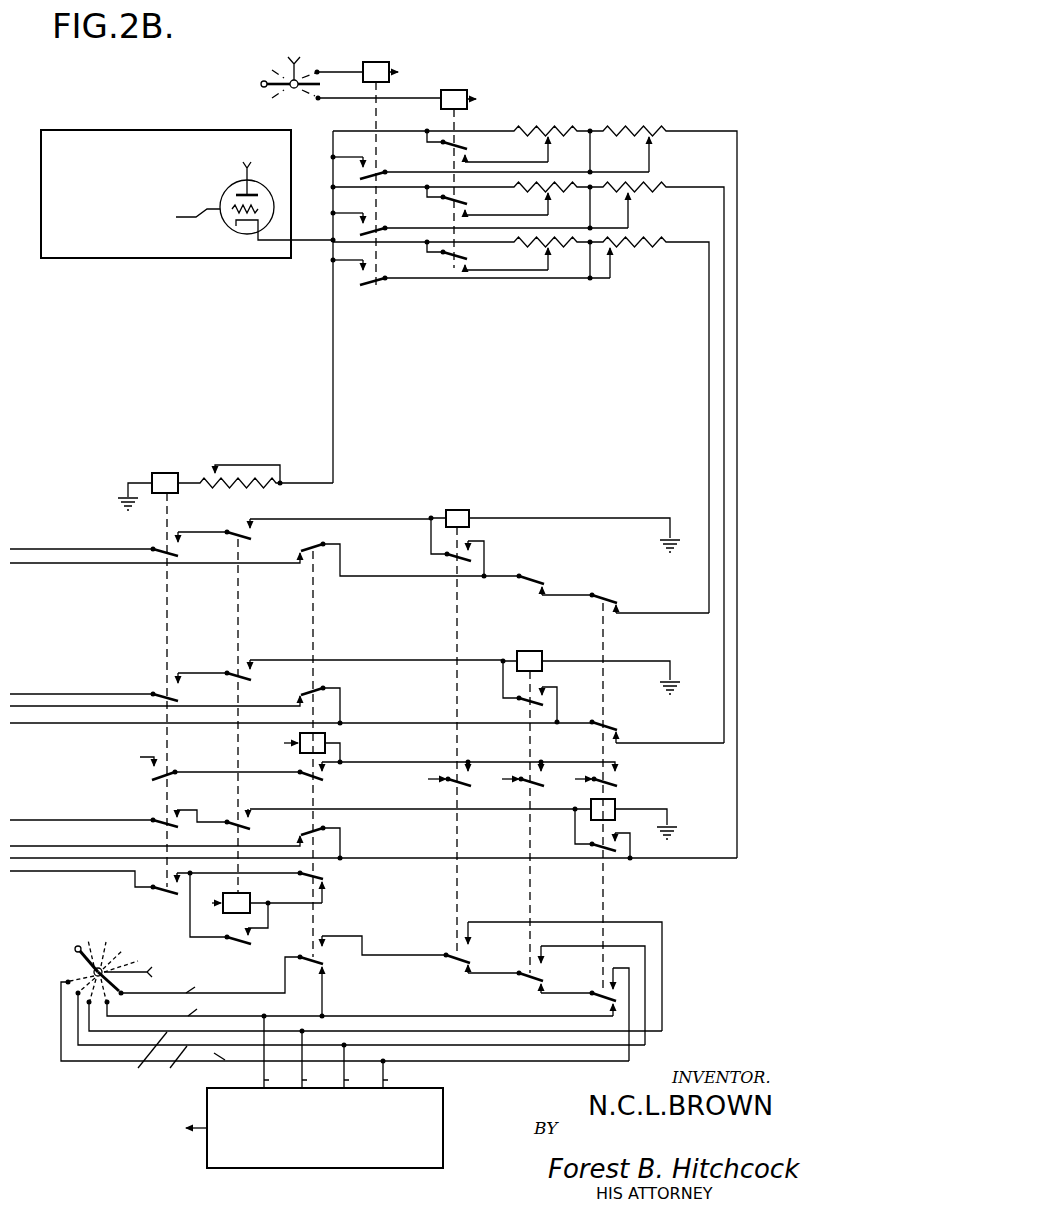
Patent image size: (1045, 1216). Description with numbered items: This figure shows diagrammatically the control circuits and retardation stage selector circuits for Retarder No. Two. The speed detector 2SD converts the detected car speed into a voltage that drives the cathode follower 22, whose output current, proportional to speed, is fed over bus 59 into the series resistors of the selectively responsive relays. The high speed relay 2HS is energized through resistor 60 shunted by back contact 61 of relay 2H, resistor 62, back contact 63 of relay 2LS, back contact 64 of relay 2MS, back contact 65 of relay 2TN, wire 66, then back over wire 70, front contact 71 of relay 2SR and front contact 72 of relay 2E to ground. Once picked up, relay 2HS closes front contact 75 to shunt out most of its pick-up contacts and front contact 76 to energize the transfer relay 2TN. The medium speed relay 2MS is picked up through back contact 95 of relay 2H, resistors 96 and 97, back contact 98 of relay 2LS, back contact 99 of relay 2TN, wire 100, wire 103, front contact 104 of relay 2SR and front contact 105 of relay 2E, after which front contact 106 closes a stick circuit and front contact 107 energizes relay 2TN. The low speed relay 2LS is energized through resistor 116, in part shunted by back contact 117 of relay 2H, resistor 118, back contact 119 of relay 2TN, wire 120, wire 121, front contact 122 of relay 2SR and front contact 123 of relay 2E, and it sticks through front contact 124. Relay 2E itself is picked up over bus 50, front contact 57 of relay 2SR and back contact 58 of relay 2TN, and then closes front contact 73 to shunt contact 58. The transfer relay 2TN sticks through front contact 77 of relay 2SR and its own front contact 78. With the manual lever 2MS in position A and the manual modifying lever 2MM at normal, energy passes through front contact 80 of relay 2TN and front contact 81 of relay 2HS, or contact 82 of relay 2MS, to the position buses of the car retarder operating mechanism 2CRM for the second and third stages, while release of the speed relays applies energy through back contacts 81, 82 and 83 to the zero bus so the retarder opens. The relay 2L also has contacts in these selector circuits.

The speed detector 2SD is at (170, 132).
The cathode follower 22 is at (259, 187).
The manual modifying lever 2MM is at (277, 96).
The relay 2L is at (372, 164).
The relay 2H is at (412, 168).
The bus 59 is at (333, 283).
The resistor 116 is at (463, 145).
The back contact of relay 2H 117 is at (443, 149).
The resistor 118 is at (663, 492).
The back contact of relay 2H 95 is at (443, 205).
The resistor 96 is at (463, 201).
The resistor 97 is at (656, 462).
The back contact of relay 2H 61 is at (443, 260).
The resistor 60 is at (463, 256).
The resistor 62 is at (649, 425).
The speed relay 2SR is at (225, 668).
The wire 70 is at (35, 549).
The front contact of relay 2SR 71 is at (163, 545).
The front contact of relay 2E 72 is at (238, 535).
The back contact of relay 2TN 65 is at (312, 542).
The wire 66 is at (62, 563).
The high speed relay 2HS is at (459, 505).
The front contact of relay 2HS 75 is at (458, 560).
The back contact of relay 2MS 64 is at (527, 585).
The back contact of relay 2LS 63 is at (603, 603).
The wire 103 is at (42, 694).
The front contact of relay 2SR 104 is at (190, 688).
The front contact of relay 2E 105 is at (364, 682).
The back contact of relay 2TN 99 is at (308, 686).
The wire 100 is at (27, 710).
The medium speed relay and lever 2MS is at (76, 961).
The front contact of relay 2MS 106 is at (527, 703).
The back contact of relay 2LS 98 is at (603, 732).
The transfer relay 2TN is at (329, 739).
The front contact of relay 2SR 77 is at (170, 777).
The front contact of relay 2TN 78 is at (310, 779).
The front contact of relay 2HS 76 is at (460, 786).
The front contact of relay 2MS 107 is at (530, 786).
The low speed relay 2LS is at (617, 806).
The front contact of relay 2LS 124 is at (590, 845).
The wire 121 is at (33, 820).
The front contact of relay 2SR 122 is at (156, 826).
The front contact of relay 2E 123 is at (244, 826).
The wire 120 is at (31, 846).
The back contact of relay 2TN 119 is at (308, 826).
The bus 50 is at (20, 872).
The front contact of relay 2SR 57 is at (166, 893).
The relay 2E is at (247, 895).
The back contact of relay 2TN 58 is at (322, 878).
The front contact of relay 2E 73 is at (239, 943).
The front contact of relay 2TN 80 is at (283, 977).
The contact of relay 2HS 81 is at (460, 962).
The contact of relay 2MS 82 is at (534, 980).
The back contact 83 is at (606, 999).
The car retarder operating mechanism 2CRM is at (445, 1107).